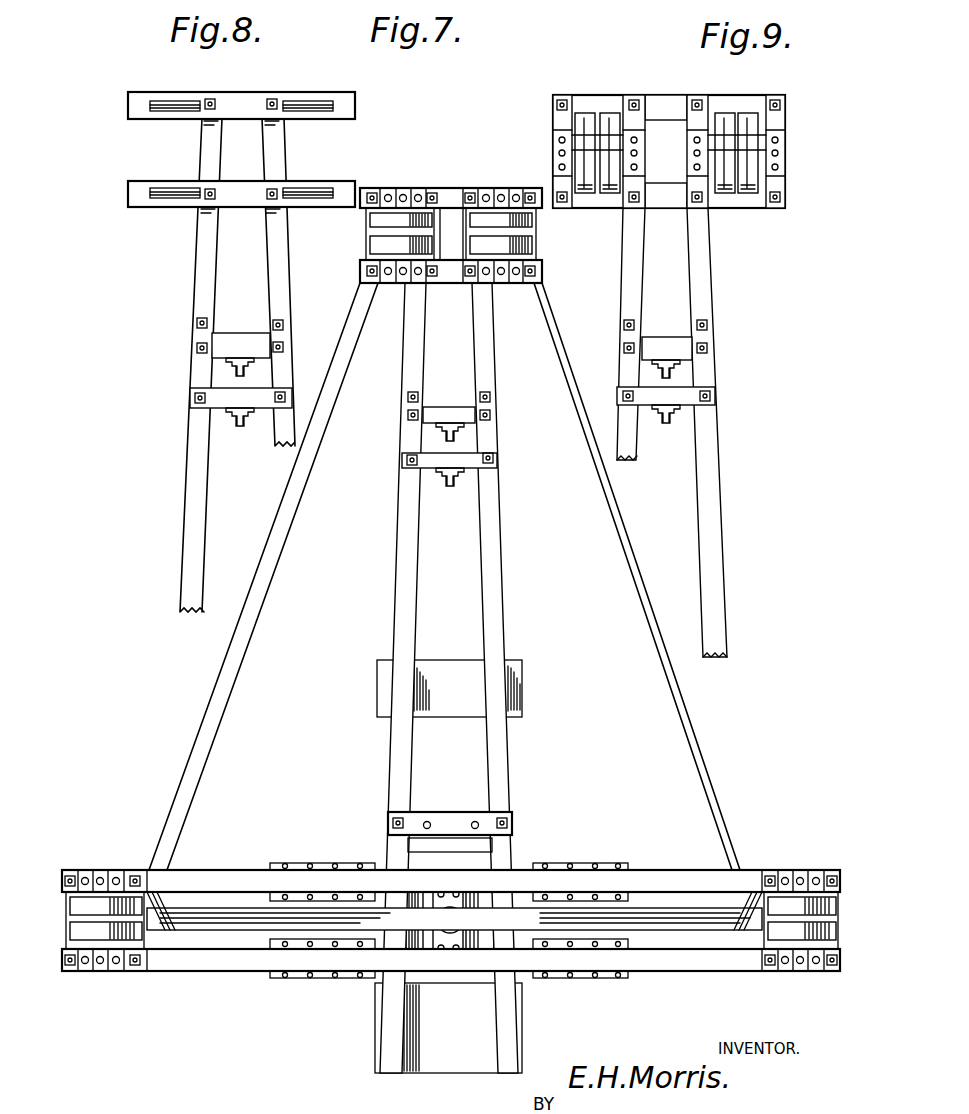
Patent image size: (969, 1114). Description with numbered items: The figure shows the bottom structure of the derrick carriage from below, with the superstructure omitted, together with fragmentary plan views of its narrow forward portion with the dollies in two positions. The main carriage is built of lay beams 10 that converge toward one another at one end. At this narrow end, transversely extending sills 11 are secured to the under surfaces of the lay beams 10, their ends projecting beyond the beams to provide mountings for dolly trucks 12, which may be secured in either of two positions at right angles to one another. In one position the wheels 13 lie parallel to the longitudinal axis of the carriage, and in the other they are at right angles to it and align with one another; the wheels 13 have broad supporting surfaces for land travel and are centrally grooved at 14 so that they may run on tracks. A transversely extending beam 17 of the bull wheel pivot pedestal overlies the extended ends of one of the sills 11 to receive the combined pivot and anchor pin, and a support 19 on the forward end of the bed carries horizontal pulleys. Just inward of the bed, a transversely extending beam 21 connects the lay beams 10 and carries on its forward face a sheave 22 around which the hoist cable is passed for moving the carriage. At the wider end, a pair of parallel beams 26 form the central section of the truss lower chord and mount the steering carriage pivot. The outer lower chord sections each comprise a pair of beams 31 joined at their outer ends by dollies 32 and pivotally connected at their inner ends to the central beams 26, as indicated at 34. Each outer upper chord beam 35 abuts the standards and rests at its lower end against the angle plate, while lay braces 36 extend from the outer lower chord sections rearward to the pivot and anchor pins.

In FIG. 8, the lay beams 10 is at (204, 478).
In FIG. 7, the lay beams 10 is at (487, 550).
In FIG. 9, the lay beams 10 is at (622, 425).
In FIG. 8, the sills 11 is at (252, 100).
In FIG. 7, the sills 11 is at (455, 200).
In FIG. 9, the sills 11 is at (700, 72).
In FIG. 7, the dolly trucks 12 is at (389, 195).
In FIG. 9, the dolly trucks 12 is at (640, 118).
In FIG. 7, the wheels 13 is at (380, 221).
In FIG. 9, the wheels 13 is at (608, 115).
In FIG. 7, the grooves 14 is at (382, 234).
In FIG. 9, the grooves 14 is at (588, 133).
In FIG. 7, the transversely extending beam 17 is at (445, 917).
In FIG. 8, the support 19 is at (243, 342).
In FIG. 7, the support 19 is at (437, 417).
In FIG. 9, the support 19 is at (657, 340).
In FIG. 8, the transversely extending beam 21 is at (227, 395).
In FIG. 7, the transversely extending beam 21 is at (422, 455).
In FIG. 9, the transversely extending beam 21 is at (675, 397).
In FIG. 8, the sheave 22 is at (230, 417).
In FIG. 7, the sheave 22 is at (450, 484).
In FIG. 9, the sheave 22 is at (666, 428).
In FIG. 7, the parallel beams 26 is at (479, 873).
In FIG. 7, the beams 31 is at (258, 870).
In FIG. 7, the dollies 32 is at (108, 870).
In FIG. 7, the pivotal connection 34 is at (305, 893).
In FIG. 7, the beam 35 is at (240, 915).
In FIG. 7, the lay braces 36 is at (235, 654).